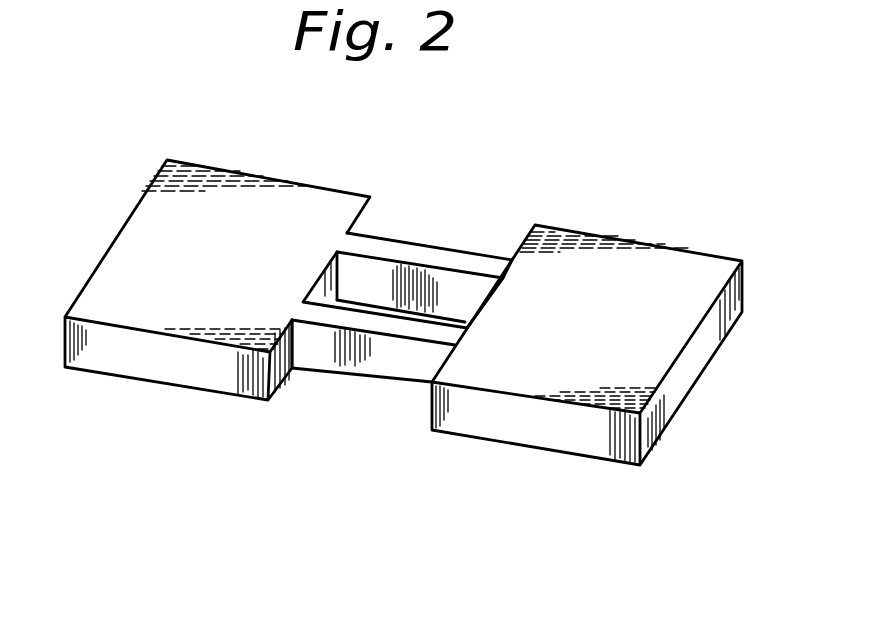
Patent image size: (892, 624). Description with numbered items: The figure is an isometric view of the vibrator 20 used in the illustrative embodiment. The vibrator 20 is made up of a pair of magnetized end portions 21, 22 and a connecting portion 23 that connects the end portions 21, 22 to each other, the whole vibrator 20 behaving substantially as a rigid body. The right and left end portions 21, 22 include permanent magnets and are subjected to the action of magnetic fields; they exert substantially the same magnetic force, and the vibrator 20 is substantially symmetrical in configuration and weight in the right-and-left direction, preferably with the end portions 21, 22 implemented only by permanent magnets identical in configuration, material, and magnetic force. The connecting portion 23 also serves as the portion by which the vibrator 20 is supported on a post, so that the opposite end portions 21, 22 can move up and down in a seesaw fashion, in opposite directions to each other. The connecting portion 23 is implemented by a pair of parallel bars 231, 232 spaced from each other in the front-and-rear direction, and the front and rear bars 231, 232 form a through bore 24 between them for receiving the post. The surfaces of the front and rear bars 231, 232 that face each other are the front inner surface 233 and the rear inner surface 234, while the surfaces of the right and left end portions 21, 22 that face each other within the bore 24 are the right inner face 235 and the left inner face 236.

The vibrator 20 is at (656, 176).
The end portion 21 is at (580, 432).
The end portion 22 is at (153, 365).
The connecting portion 23 is at (385, 497).
The front bar 231 is at (317, 360).
The rear bar 232 is at (418, 242).
The front inner surface 233 is at (406, 308).
The rear inner surface 234 is at (448, 298).
The right inner face 235 is at (487, 292).
The left inner face 236 is at (327, 283).
The through bore 24 is at (370, 290).